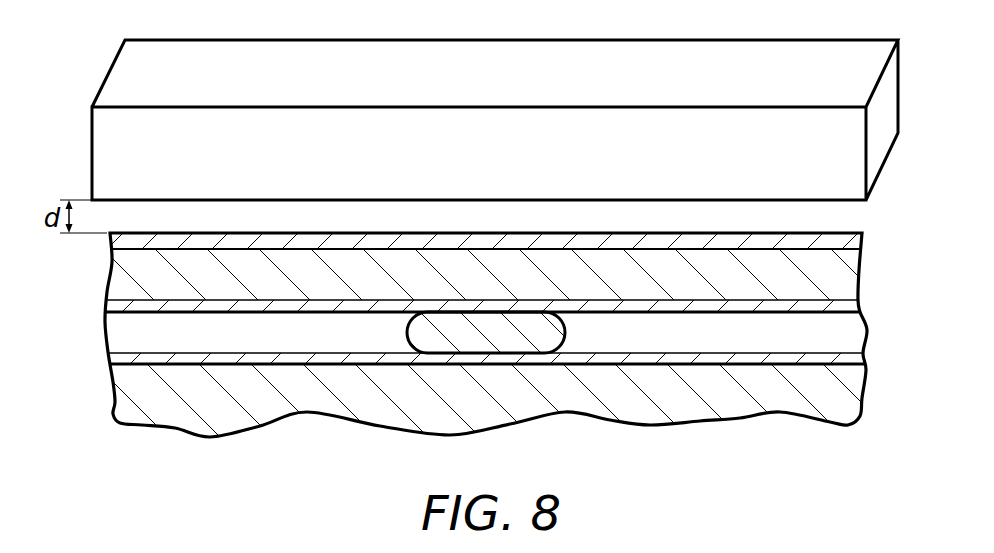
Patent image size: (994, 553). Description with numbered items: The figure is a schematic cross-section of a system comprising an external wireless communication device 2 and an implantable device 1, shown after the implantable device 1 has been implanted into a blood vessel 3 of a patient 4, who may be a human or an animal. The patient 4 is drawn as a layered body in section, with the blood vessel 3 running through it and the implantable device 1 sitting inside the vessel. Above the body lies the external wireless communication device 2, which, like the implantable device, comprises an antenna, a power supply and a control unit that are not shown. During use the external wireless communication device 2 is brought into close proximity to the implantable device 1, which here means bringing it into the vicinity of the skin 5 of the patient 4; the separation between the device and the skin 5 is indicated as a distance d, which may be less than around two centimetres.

The implantable device 1 is at (528, 356).
The external wireless communication device 2 is at (618, 48).
The blood vessel 3 is at (683, 368).
The patient 4 is at (882, 338).
The skin 5 is at (855, 243).